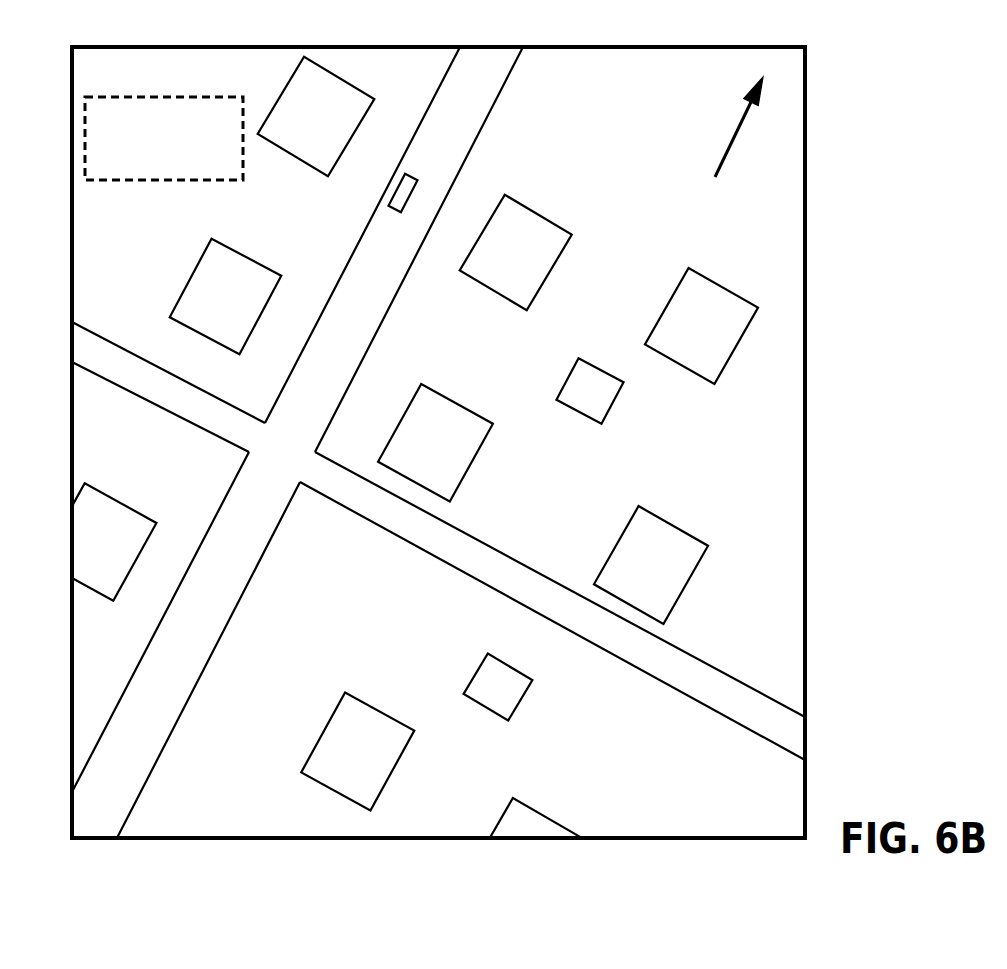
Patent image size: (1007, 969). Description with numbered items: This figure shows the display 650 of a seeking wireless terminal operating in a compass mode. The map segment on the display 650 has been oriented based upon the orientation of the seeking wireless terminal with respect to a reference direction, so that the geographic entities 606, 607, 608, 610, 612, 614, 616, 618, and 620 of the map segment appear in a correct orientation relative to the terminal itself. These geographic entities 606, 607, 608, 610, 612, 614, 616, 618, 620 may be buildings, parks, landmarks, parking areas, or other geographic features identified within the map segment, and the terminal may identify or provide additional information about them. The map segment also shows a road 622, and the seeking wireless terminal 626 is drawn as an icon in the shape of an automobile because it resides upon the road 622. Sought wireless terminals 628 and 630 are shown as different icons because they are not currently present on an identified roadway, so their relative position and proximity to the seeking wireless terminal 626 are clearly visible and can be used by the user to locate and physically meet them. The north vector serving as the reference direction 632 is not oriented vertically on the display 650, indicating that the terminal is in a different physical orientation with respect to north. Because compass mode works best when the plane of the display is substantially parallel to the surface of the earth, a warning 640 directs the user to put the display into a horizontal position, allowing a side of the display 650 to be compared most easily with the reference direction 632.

The geographic entity 606 is at (316, 116).
The geographic entity 607 is at (516, 253).
The geographic entity 608 is at (701, 326).
The geographic entity 610 is at (226, 297).
The geographic entity 612 is at (435, 443).
The geographic entity 614 is at (651, 565).
The geographic entity 616 is at (99, 542).
The geographic entity 618 is at (357, 752).
The geographic entity 620 is at (518, 800).
The road 622 is at (253, 573).
The seeking wireless terminal 626 is at (408, 177).
The sought wireless terminal 628 is at (589, 390).
The sought wireless terminal 630 is at (498, 686).
The reference direction 632 is at (718, 167).
The warning 640 is at (167, 96).
The display 650 is at (728, 46).